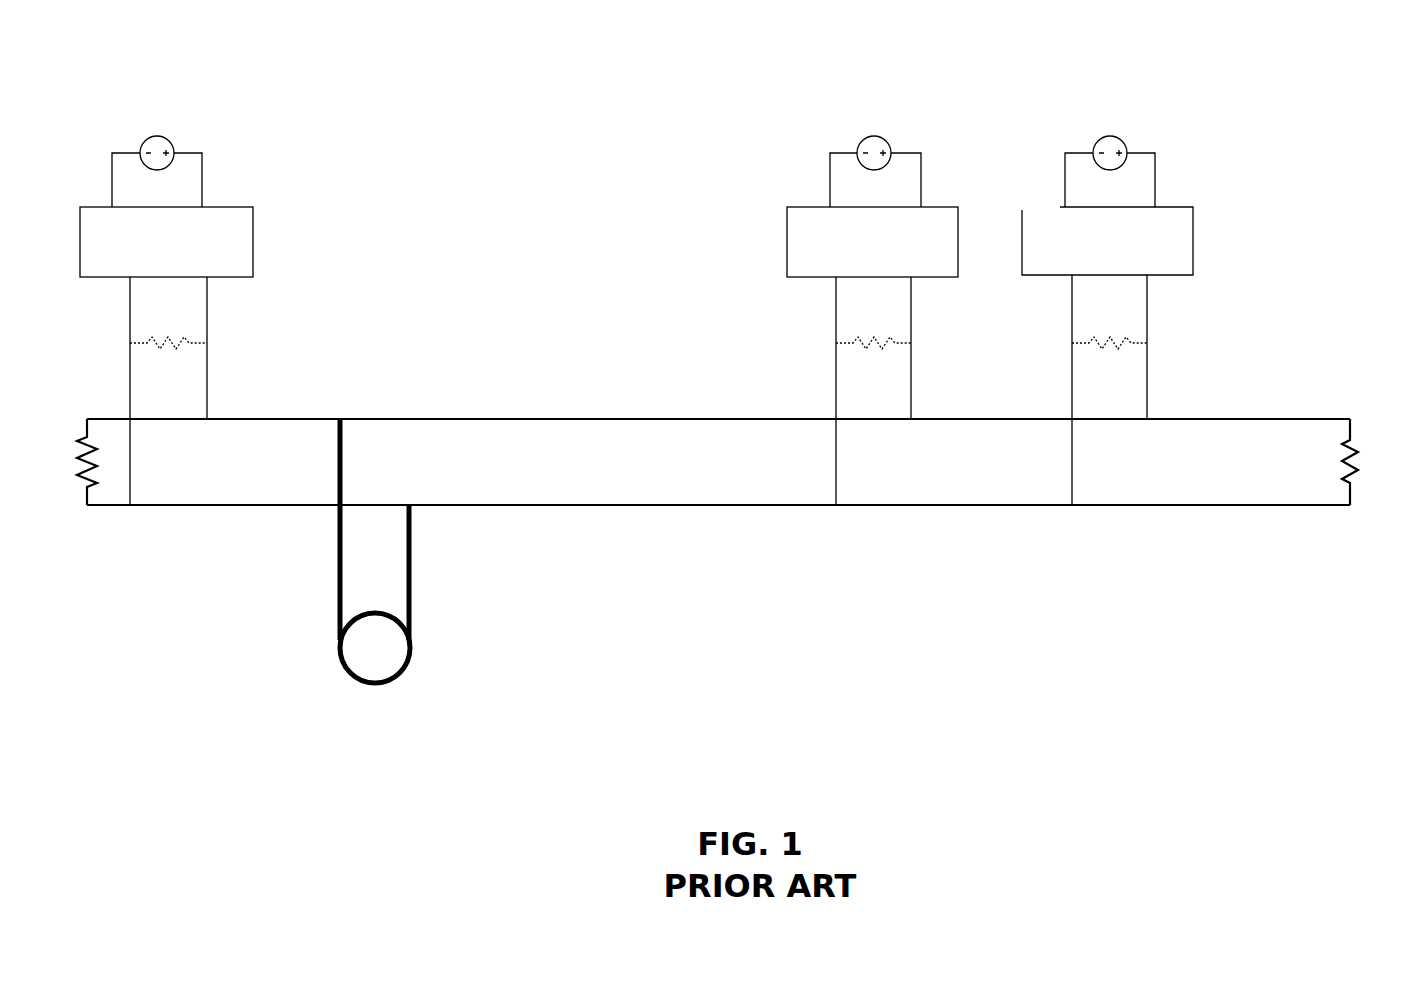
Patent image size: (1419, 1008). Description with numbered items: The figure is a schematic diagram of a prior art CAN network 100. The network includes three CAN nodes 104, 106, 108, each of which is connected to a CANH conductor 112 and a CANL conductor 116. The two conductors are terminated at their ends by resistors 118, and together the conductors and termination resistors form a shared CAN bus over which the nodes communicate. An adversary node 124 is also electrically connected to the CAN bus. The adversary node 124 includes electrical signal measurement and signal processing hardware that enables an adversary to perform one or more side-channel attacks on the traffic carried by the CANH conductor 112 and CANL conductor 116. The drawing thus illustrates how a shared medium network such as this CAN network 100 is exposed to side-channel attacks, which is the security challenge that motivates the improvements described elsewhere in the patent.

The CAN network 100 is at (190, 73).
The CAN node 104 is at (243, 205).
The CAN node 106 is at (927, 205).
The CAN node 108 is at (1182, 203).
The CANH conductor 112 is at (642, 417).
The CANL conductor 116 is at (640, 505).
The resistors 118 is at (88, 443).
The adversary node 124 is at (392, 690).